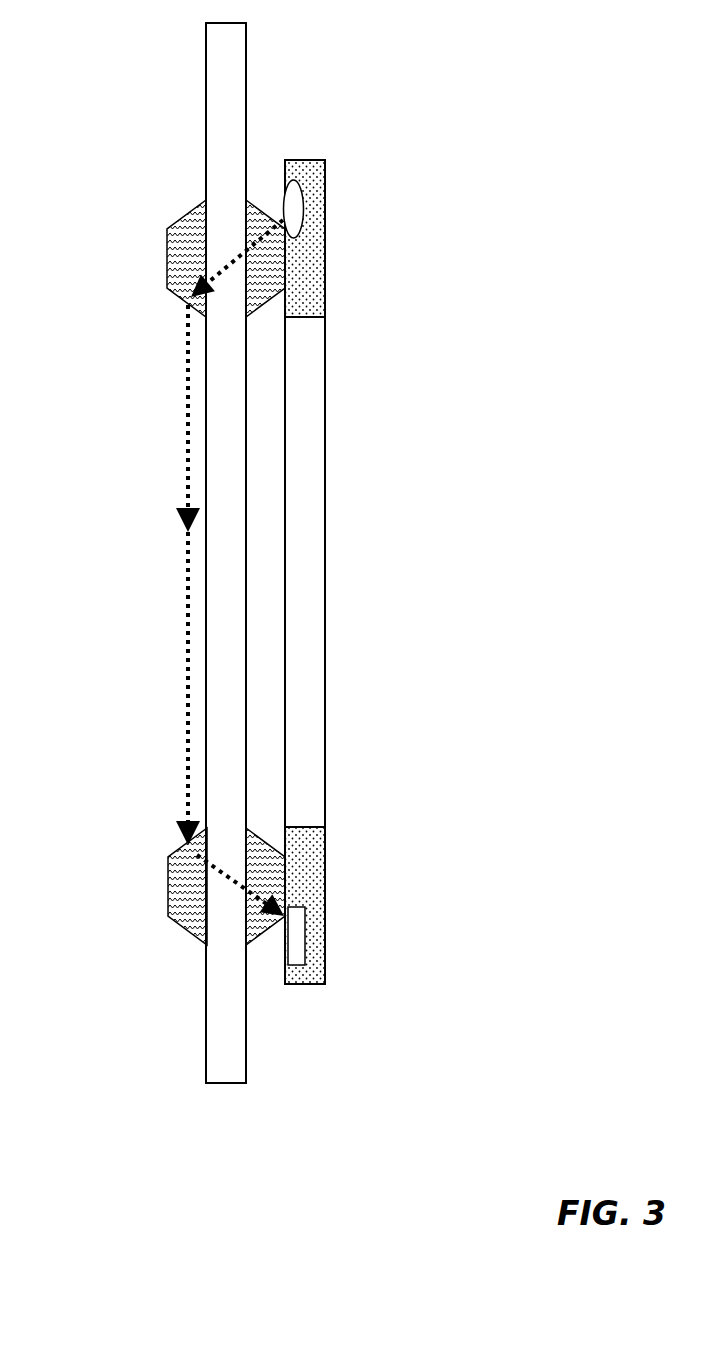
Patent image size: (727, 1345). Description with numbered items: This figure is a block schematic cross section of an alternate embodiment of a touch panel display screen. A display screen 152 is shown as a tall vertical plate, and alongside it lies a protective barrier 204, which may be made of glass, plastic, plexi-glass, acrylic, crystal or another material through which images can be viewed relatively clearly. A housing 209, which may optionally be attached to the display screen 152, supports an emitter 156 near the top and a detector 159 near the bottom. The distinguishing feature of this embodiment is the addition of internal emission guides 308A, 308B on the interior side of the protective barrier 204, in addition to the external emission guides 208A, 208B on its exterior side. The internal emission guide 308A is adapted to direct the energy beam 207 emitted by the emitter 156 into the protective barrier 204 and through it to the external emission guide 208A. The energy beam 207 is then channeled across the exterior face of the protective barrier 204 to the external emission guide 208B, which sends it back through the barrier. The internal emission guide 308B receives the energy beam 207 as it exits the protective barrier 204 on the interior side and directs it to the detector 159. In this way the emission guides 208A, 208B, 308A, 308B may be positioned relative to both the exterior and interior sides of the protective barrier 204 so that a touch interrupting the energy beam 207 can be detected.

The protective barrier 204 is at (227, 122).
The display screen 152 is at (325, 493).
The housing 209 is at (325, 298).
The emitter 156 is at (303, 200).
The detector 159 is at (305, 945).
The external emission guide 208A is at (167, 258).
The internal emission guide 308A is at (258, 207).
The external emission guide 208B is at (168, 885).
The internal emission guide 308B is at (268, 925).
The energy beam 207 is at (187, 472).